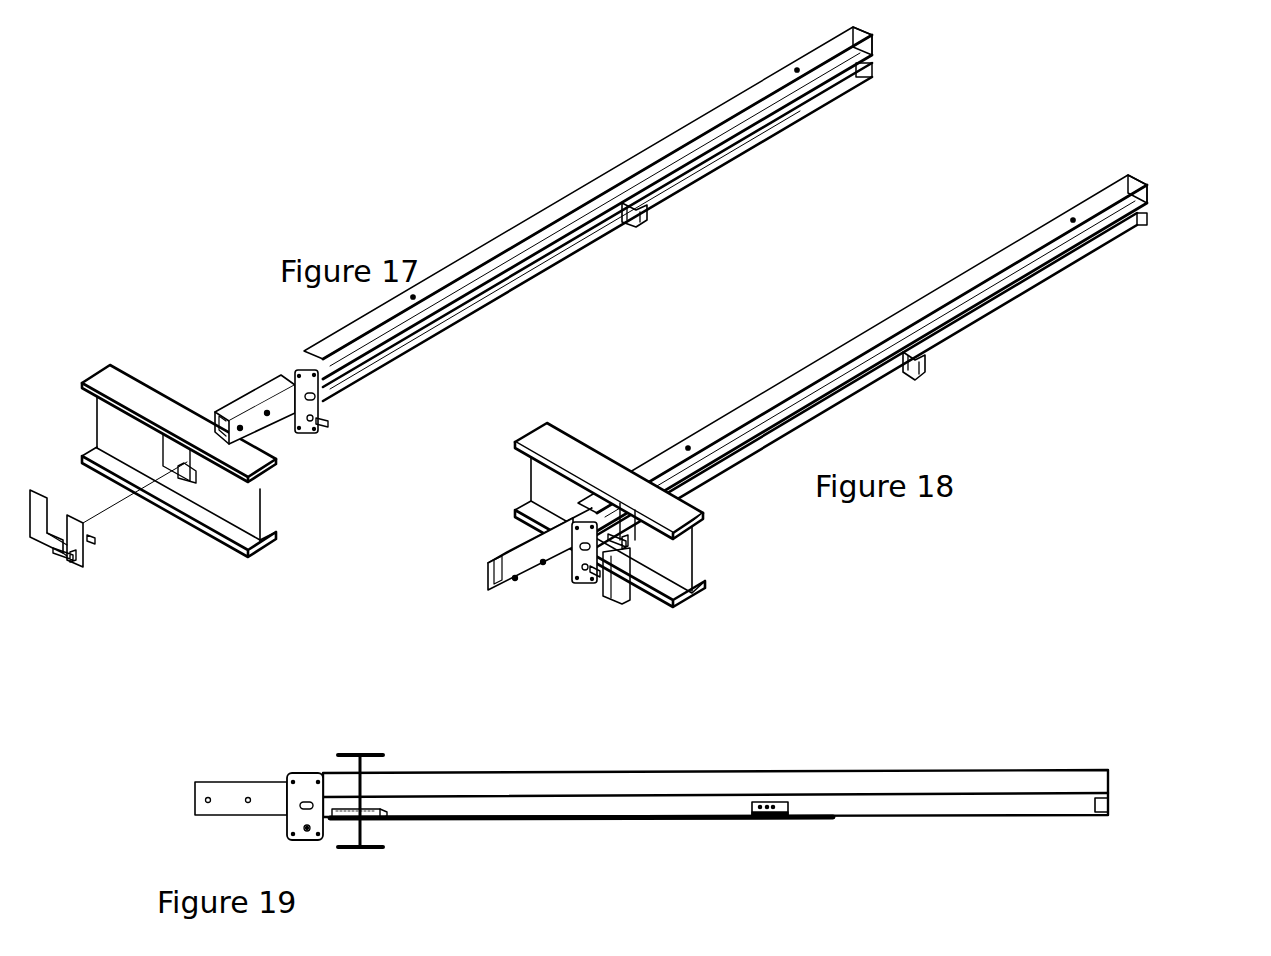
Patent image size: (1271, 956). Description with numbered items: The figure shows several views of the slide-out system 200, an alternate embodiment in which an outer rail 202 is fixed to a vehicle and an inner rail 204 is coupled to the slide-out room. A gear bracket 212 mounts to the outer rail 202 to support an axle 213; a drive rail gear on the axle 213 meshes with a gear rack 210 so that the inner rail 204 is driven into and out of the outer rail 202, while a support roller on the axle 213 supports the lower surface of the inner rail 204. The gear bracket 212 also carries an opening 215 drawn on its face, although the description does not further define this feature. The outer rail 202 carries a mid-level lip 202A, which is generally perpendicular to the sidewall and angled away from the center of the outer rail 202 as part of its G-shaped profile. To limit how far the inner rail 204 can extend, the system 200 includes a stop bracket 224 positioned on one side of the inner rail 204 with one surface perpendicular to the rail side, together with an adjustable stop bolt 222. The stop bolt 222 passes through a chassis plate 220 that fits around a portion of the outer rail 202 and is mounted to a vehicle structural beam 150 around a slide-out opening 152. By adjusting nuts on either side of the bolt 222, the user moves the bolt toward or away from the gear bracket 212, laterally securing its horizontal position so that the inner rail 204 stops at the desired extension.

In FIG. 17, the vehicle structural beam 150 is at (262, 486).
In FIG. 18, the vehicle structural beam 150 is at (693, 552).
In FIG. 19, the vehicle structural beam 150 is at (373, 755).
In FIG. 17, the slide-out opening 152 is at (188, 470).
In FIG. 17, the slide-out system 200 is at (627, 268).
In FIG. 18, the slide-out system 200 is at (962, 403).
In FIG. 19, the slide-out system 200 is at (977, 855).
In FIG. 17, the outer rail 202 is at (560, 200).
In FIG. 18, the outer rail 202 is at (755, 395).
In FIG. 19, the outer rail 202 is at (620, 773).
In FIG. 17, the mid-level lip 202A is at (873, 57).
In FIG. 18, the mid-level lip 202A is at (1150, 212).
In FIG. 19, the mid-level lip 202A is at (1101, 805).
In FIG. 17, the inner rail 204 is at (247, 397).
In FIG. 18, the inner rail 204 is at (490, 597).
In FIG. 19, the inner rail 204 is at (195, 817).
In FIG. 17, the gear rack 210 is at (483, 290).
In FIG. 18, the gear rack 210 is at (737, 463).
In FIG. 19, the gear rack 210 is at (598, 822).
In FIG. 17, the gear bracket 212 is at (303, 434).
In FIG. 18, the gear bracket 212 is at (570, 575).
In FIG. 19, the gear bracket 212 is at (300, 773).
In FIG. 17, the axle 213 is at (329, 425).
In FIG. 19, the axle 213 is at (307, 833).
In FIG. 17, the slot 215 is at (316, 397).
In FIG. 18, the slot 215 is at (574, 541).
In FIG. 19, the slot 215 is at (300, 807).
In FIG. 17, the chassis plate 220 is at (32, 486).
In FIG. 18, the chassis plate 220 is at (627, 554).
In FIG. 17, the adjustable stop bolt 222 is at (90, 542).
In FIG. 18, the adjustable stop bolt 222 is at (610, 551).
In FIG. 19, the adjustable stop bolt 222 is at (377, 820).
In FIG. 17, the stop bracket 224 is at (643, 220).
In FIG. 18, the stop bracket 224 is at (922, 368).
In FIG. 19, the stop bracket 224 is at (787, 820).